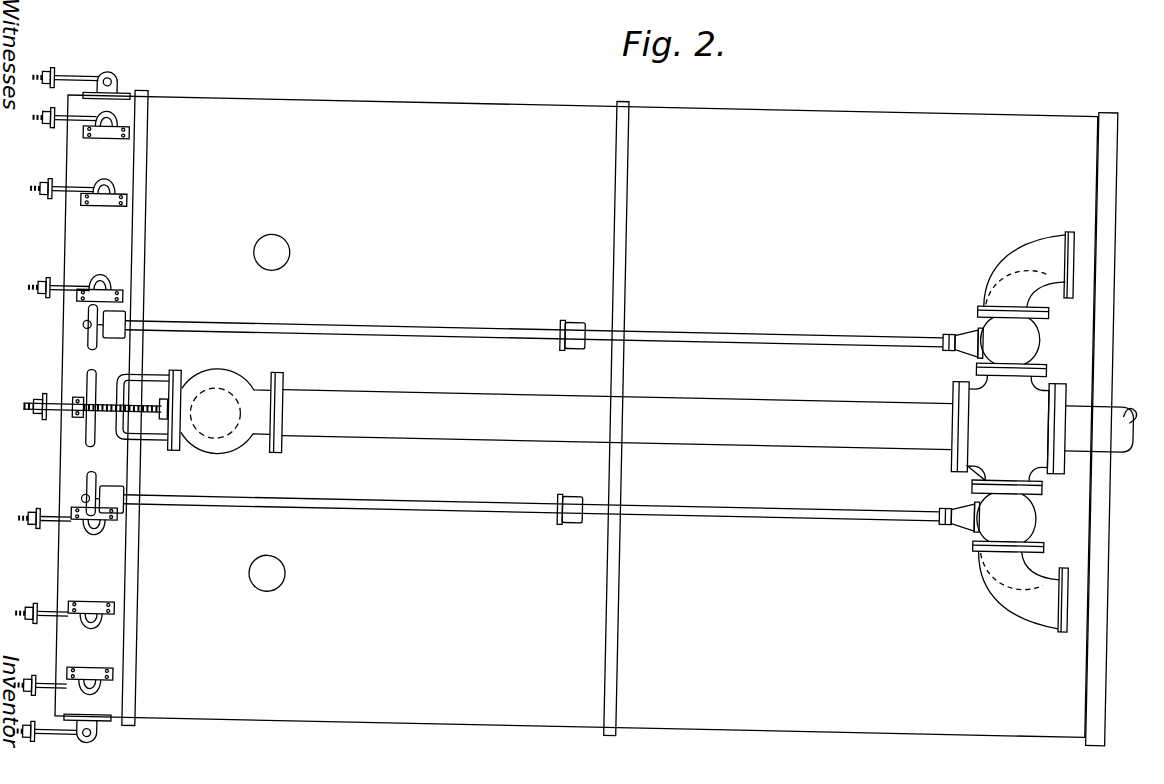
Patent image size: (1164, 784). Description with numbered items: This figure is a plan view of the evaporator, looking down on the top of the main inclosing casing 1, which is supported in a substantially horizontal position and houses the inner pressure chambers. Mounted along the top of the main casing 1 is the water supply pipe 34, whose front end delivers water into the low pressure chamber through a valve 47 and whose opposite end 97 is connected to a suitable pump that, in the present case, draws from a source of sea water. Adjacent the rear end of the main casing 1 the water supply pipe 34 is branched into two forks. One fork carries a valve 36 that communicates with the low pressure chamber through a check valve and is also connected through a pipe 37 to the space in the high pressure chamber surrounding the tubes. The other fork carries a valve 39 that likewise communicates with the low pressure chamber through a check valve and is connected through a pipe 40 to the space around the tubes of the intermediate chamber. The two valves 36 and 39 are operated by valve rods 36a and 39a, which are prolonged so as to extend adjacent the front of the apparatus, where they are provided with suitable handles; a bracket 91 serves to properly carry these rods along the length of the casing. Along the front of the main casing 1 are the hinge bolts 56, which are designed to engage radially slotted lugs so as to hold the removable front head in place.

The main inclosing casing 1 is at (576, 401).
The water supply pipe 34 is at (617, 405).
The valve 36 is at (1031, 335).
The valve rod 36a is at (533, 339).
The pipe 37 is at (1029, 257).
The valve 39 is at (1027, 523).
The valve rod 39a is at (530, 512).
The pipe 40 is at (1023, 601).
The valve 47 is at (152, 425).
The hinge bolts 56 is at (0, 185).
The bracket 91 is at (561, 422).
The opposite end of water supply pipe 97 is at (1101, 429).